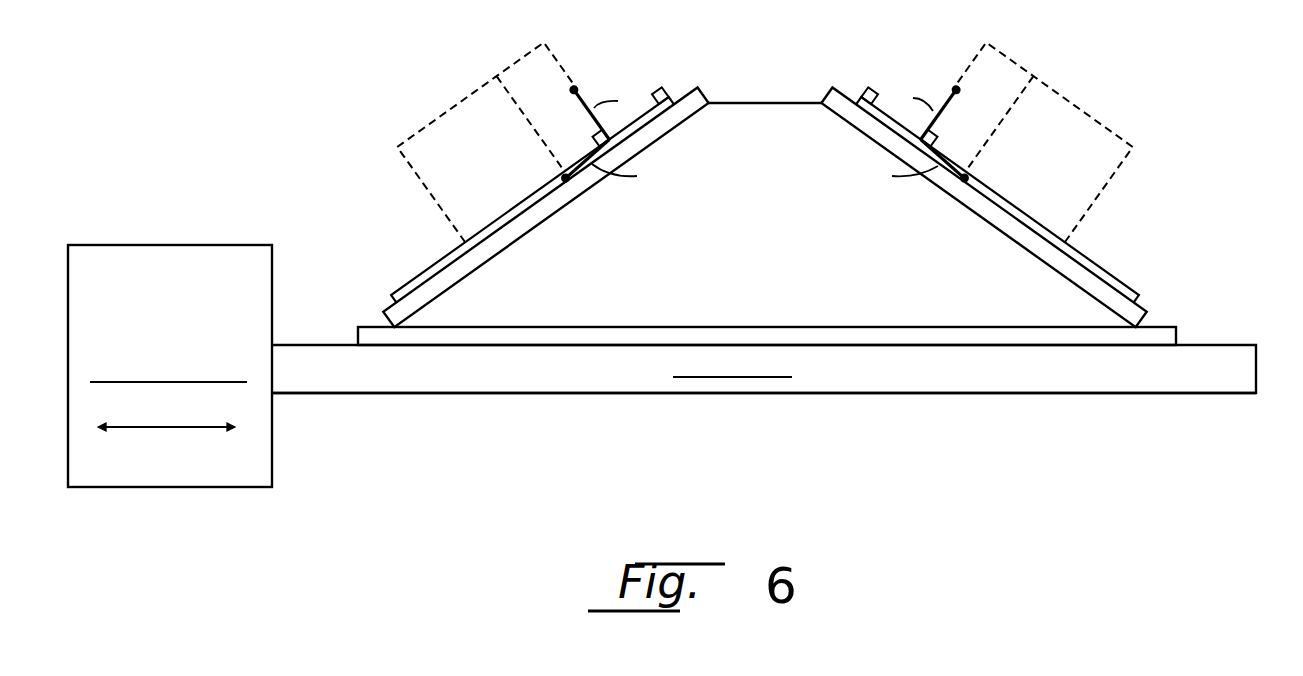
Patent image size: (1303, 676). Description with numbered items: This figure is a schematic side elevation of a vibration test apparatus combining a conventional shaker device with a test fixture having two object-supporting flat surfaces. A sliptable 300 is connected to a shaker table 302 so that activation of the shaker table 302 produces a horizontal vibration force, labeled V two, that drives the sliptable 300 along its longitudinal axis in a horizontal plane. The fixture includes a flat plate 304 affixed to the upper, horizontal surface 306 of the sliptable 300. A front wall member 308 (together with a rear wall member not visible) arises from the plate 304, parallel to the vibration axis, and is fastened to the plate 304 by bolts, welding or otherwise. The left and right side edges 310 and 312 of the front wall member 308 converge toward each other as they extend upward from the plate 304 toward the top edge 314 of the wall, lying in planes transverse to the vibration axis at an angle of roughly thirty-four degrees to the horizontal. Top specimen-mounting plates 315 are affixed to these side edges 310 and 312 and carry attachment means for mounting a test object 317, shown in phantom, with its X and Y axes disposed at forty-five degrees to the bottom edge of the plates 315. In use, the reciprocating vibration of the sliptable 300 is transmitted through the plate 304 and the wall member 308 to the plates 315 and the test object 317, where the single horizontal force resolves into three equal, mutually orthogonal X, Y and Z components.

The sliptable 300 is at (777, 393).
The shaker table 302 is at (132, 244).
The flat plate 304 is at (1176, 328).
The upper horizontal surface 306 is at (1227, 345).
The front wall member 308 is at (764, 187).
The left side edge 310 is at (483, 266).
The right side edge 312 is at (1040, 263).
The top edge 314 is at (777, 103).
The top specimen-mounting plate 315 is at (397, 299).
The test object 317 is at (470, 92).